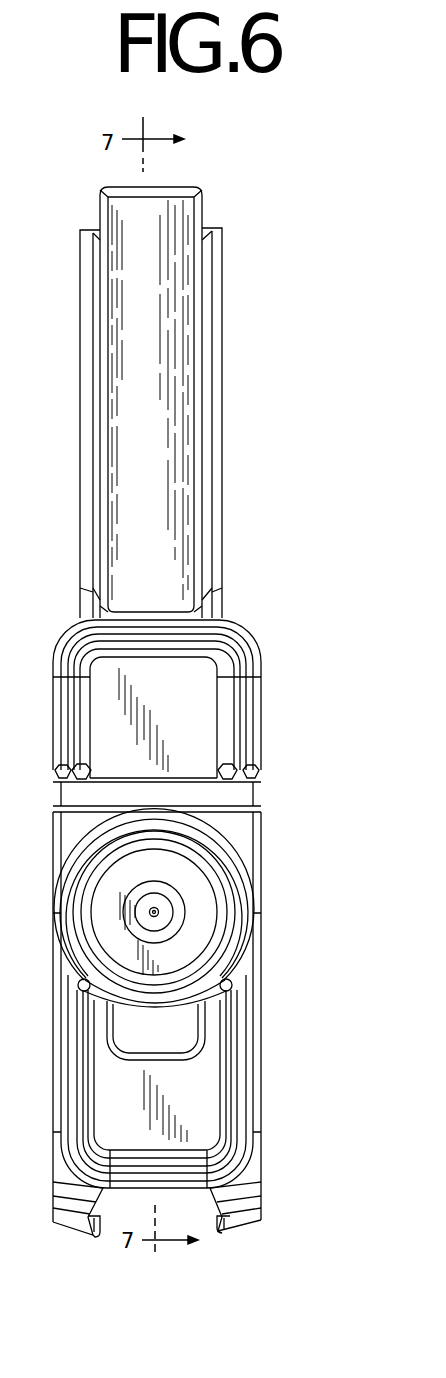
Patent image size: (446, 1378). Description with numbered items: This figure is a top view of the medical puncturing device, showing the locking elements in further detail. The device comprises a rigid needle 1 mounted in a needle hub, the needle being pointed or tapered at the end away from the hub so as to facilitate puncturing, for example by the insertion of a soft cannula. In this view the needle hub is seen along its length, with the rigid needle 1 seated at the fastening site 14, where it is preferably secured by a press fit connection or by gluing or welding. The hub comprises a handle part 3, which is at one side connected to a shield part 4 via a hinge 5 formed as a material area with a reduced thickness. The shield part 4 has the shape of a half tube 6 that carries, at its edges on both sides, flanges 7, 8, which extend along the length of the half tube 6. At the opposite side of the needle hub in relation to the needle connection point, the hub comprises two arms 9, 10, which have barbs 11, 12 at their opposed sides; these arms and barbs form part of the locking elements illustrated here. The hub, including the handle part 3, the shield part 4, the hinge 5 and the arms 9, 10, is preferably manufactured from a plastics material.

The rigid needle 1 is at (163, 913).
The handle part 3 is at (193, 1088).
The shield part 4 is at (193, 718).
The hinge 5 is at (233, 832).
The half tube 6 is at (177, 297).
The flange 7 is at (100, 412).
The flange 8 is at (230, 400).
The arm 9 is at (73, 1210).
The arm 10 is at (250, 1208).
The barb 11 is at (95, 1234).
The barb 12 is at (221, 1231).
The fastening site 14 is at (177, 888).